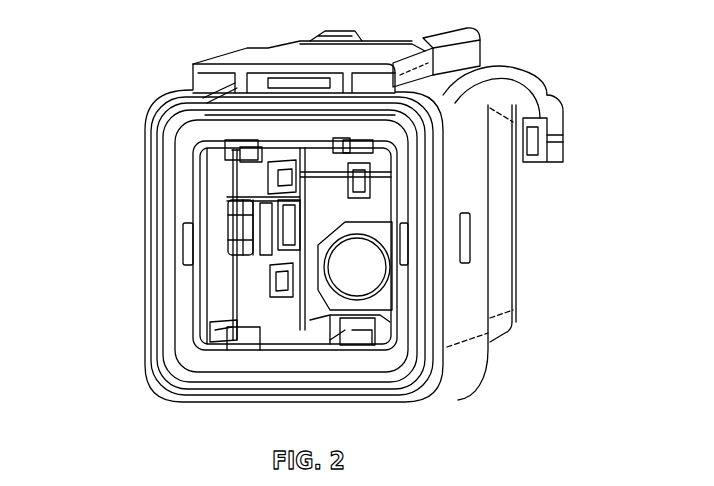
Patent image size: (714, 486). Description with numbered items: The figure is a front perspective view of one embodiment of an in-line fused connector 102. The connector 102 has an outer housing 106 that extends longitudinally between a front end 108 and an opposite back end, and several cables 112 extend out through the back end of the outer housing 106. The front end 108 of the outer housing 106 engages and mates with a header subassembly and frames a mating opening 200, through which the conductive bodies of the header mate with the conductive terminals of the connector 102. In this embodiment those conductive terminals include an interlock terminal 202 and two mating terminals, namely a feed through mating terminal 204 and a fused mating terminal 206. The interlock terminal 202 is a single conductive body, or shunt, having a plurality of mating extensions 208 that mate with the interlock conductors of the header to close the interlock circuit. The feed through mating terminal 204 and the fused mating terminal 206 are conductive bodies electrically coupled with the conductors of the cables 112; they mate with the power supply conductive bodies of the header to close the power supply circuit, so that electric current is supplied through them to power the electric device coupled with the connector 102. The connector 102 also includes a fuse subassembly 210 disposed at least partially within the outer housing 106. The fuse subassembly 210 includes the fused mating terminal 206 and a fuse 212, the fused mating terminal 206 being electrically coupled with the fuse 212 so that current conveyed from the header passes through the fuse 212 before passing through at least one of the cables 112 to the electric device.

The connector 102 is at (148, 66).
The outer housing 106 is at (458, 372).
The front end 108 is at (168, 391).
The cables 112 is at (553, 127).
The mating opening 200 is at (392, 338).
The interlock terminal 202 is at (252, 158).
The feed through mating terminal 204 is at (282, 158).
The fused mating terminal 206 is at (280, 300).
The mating extensions 208 is at (247, 237).
The fuse subassembly 210 is at (377, 202).
The fuse 212 is at (363, 275).